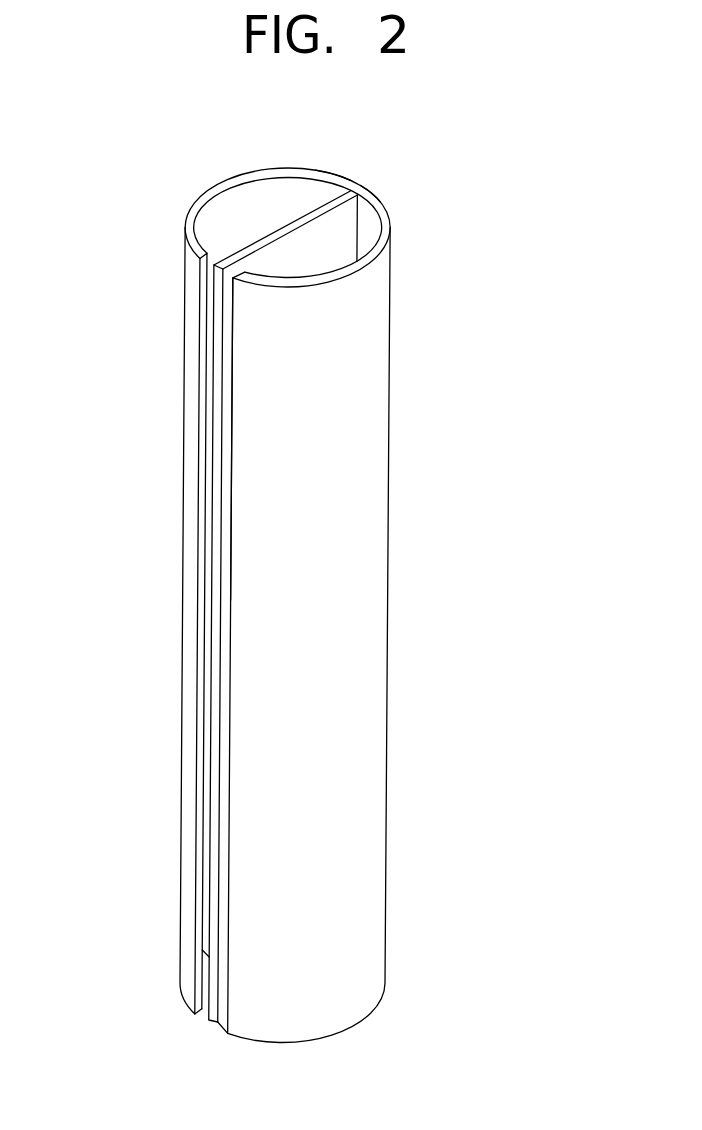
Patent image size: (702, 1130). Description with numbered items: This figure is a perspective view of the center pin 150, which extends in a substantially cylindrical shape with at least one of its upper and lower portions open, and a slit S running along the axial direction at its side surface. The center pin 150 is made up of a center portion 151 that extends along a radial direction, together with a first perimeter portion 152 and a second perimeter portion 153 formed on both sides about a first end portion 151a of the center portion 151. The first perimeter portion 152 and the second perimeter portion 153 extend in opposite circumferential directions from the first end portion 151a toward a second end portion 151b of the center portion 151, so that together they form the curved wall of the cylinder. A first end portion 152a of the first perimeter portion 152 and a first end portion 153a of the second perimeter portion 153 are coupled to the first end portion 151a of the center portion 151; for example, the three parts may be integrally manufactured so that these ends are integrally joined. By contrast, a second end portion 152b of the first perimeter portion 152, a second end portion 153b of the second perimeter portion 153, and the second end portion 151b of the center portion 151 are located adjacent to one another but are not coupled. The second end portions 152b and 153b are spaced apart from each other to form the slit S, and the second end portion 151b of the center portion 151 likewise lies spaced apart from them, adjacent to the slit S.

The center pin 150 is at (314, 575).
The center portion 151 is at (257, 535).
The first end portion of the center portion 151a is at (352, 187).
The second end portion of the center portion 151b is at (220, 262).
The first perimeter portion 152 is at (239, 560).
The first end portion of the first perimeter portion 152a is at (333, 178).
The second end portion of the first perimeter portion 152b is at (195, 245).
The second perimeter portion 153 is at (284, 601).
The first end portion of the second perimeter portion 153a is at (377, 203).
The second end portion of the second perimeter portion 153b is at (232, 293).
The slit S is at (208, 437).